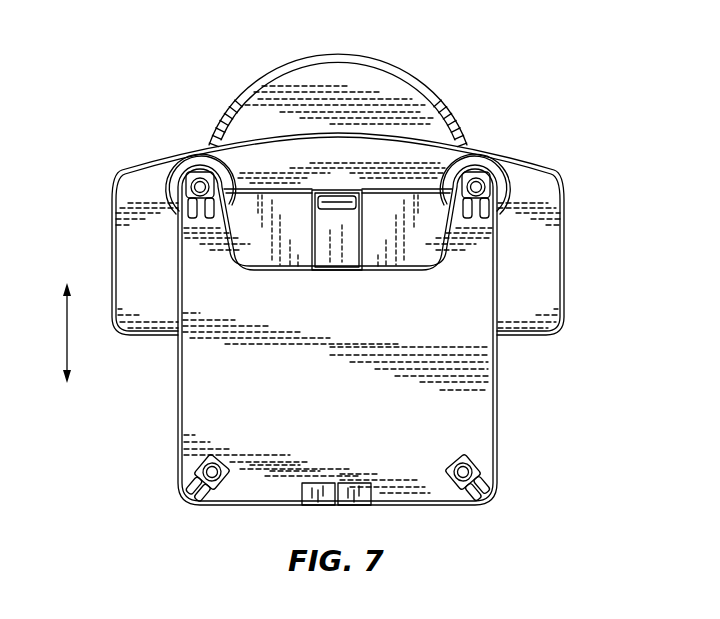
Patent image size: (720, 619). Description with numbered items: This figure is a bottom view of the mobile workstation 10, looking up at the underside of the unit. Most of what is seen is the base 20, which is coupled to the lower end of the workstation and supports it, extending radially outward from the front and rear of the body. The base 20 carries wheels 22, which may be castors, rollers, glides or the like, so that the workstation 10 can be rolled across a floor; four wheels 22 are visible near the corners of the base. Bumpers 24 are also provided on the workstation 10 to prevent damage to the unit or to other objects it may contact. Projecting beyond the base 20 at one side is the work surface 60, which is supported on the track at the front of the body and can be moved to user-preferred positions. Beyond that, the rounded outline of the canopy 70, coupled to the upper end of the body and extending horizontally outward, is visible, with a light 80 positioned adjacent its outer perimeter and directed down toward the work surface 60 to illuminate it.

The mobile workstation 10 is at (541, 392).
The base 20 is at (178, 383).
The wheels 22 is at (183, 200).
The bumpers 24 is at (193, 163).
The work surface 60 is at (140, 278).
The canopy 70 is at (370, 85).
The light 80 is at (300, 67).